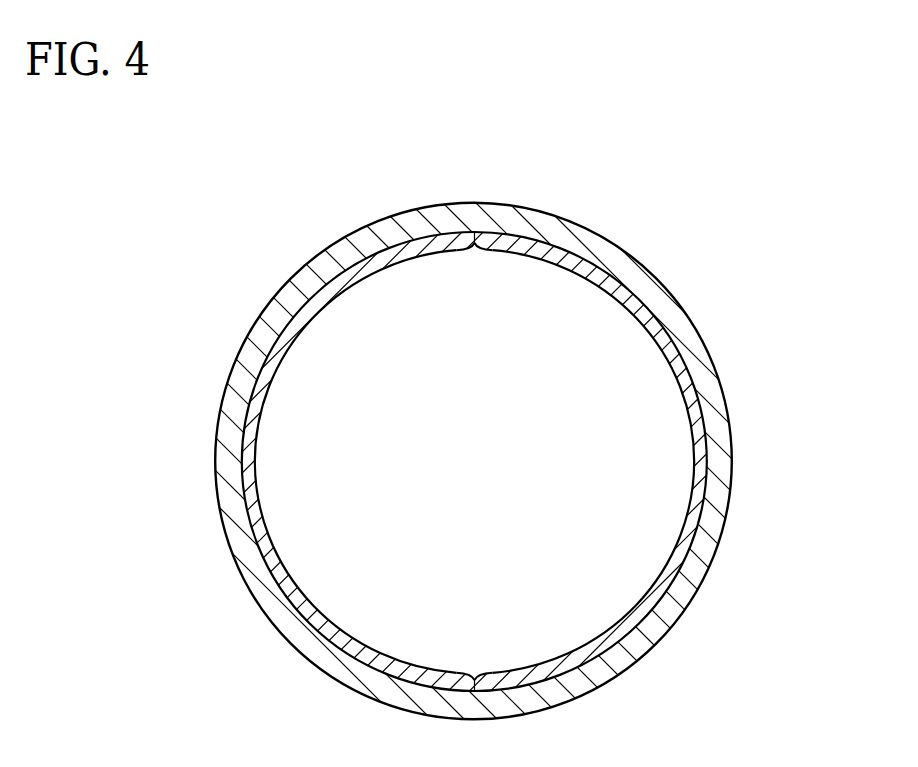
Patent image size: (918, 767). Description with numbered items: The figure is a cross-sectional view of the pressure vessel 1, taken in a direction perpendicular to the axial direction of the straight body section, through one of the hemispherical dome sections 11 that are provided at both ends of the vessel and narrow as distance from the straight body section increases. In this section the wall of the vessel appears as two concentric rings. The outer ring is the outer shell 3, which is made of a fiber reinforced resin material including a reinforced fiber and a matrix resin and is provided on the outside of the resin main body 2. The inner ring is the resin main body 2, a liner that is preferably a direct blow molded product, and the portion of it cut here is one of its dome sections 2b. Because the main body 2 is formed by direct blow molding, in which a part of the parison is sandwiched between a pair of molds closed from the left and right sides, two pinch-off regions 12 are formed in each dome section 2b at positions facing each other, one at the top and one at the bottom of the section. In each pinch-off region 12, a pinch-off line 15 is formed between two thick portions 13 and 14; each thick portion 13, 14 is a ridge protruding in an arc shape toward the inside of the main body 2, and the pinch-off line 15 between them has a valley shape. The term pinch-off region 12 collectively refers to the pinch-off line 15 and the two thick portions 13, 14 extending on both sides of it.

The pressure vessel 1 is at (595, 212).
The resin main body 2 is at (692, 472).
The dome section of the main body 2b is at (677, 541).
The outer shell 3 is at (733, 457).
The dome section 11 is at (722, 390).
The pinch-off region 12 is at (392, 318).
The thick portion 13 is at (469, 249).
The thick portion 14 is at (481, 249).
The pinch-off line 15 is at (474, 247).